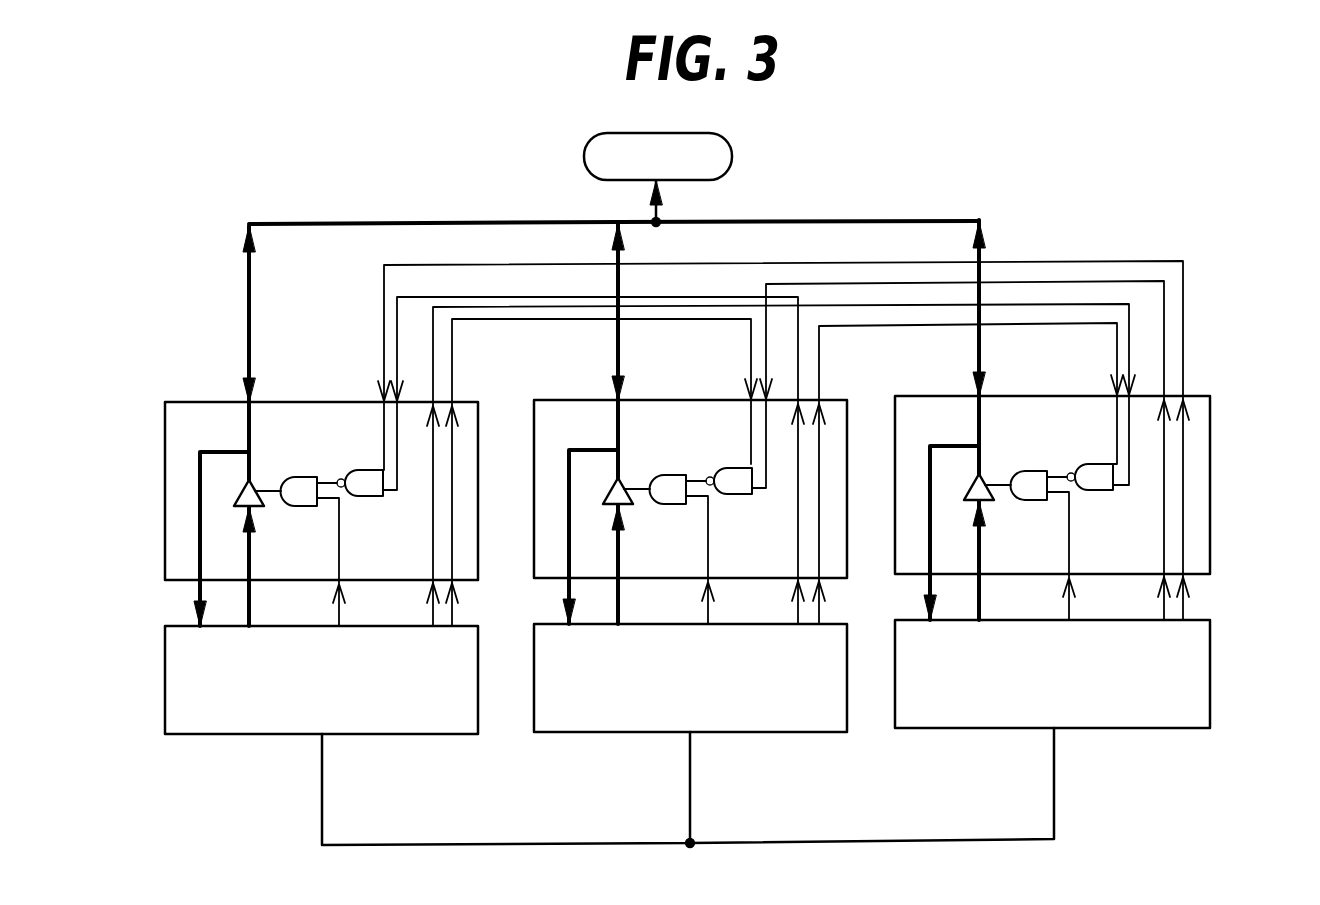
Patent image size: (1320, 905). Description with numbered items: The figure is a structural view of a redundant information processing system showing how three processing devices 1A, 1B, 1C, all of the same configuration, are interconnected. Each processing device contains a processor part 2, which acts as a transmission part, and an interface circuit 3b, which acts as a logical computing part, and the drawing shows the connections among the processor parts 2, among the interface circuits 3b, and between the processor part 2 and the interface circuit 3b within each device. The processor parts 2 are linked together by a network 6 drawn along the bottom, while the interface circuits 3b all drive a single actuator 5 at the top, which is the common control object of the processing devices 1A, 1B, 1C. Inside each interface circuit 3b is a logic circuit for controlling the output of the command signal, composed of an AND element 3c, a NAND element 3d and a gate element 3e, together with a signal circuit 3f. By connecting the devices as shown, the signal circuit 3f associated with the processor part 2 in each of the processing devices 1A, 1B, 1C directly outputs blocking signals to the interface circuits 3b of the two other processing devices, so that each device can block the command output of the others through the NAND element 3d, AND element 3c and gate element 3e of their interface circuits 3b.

The actuator 5 is at (733, 157).
The network 6 is at (772, 840).
The processor part 2 is at (213, 735).
The processing device 1A is at (277, 762).
The processing device 1B is at (634, 760).
The processing device 1C is at (1009, 757).
The interface circuit 3b is at (203, 381).
The AND element 3c is at (307, 477).
The NAND element 3d is at (358, 469).
The gate element 3e is at (252, 478).
The signal circuit 3f is at (453, 463).